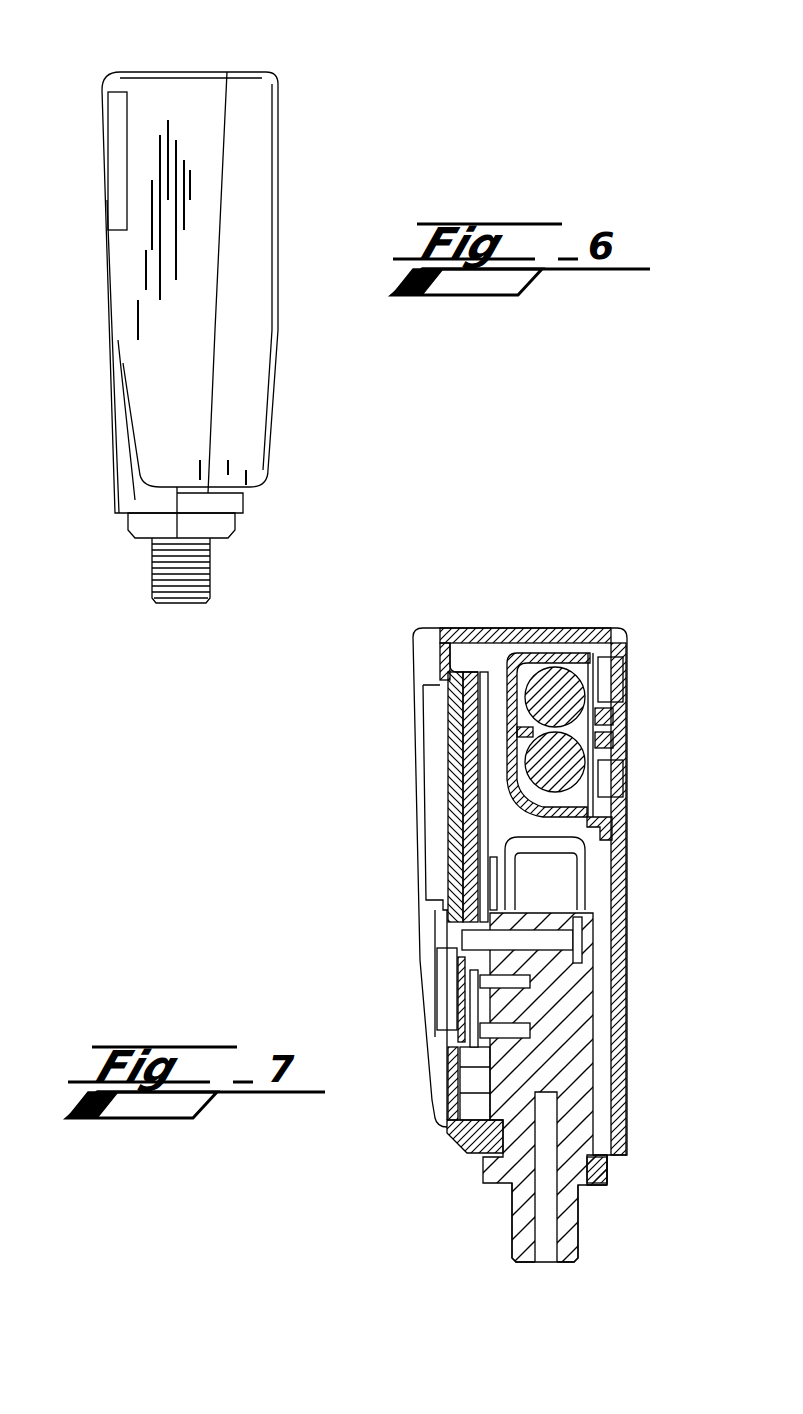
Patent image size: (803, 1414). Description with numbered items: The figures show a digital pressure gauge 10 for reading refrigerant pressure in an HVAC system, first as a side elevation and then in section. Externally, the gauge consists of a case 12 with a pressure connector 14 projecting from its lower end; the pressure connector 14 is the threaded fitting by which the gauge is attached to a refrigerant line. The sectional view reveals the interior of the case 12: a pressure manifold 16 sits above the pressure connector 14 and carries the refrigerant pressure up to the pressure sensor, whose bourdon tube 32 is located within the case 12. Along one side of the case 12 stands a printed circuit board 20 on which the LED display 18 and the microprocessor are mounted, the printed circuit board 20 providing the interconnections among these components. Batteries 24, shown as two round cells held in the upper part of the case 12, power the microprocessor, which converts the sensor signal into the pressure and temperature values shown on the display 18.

In FIG. 7, the digital pressure gauge 10 is at (378, 879).
In FIG. 6, the case 12 is at (195, 72).
In FIG. 7, the case 12 is at (577, 627).
In FIG. 6, the pressure connector 14 is at (153, 568).
In FIG. 7, the pressure connector 14 is at (510, 1225).
In FIG. 7, the pressure manifold 16 is at (572, 1032).
In FIG. 7, the display 18 is at (455, 800).
In FIG. 7, the printed circuit board 20 is at (460, 673).
In FIG. 7, the batteries 24 is at (560, 704).
In FIG. 7, the bourdon tube 32 is at (562, 877).